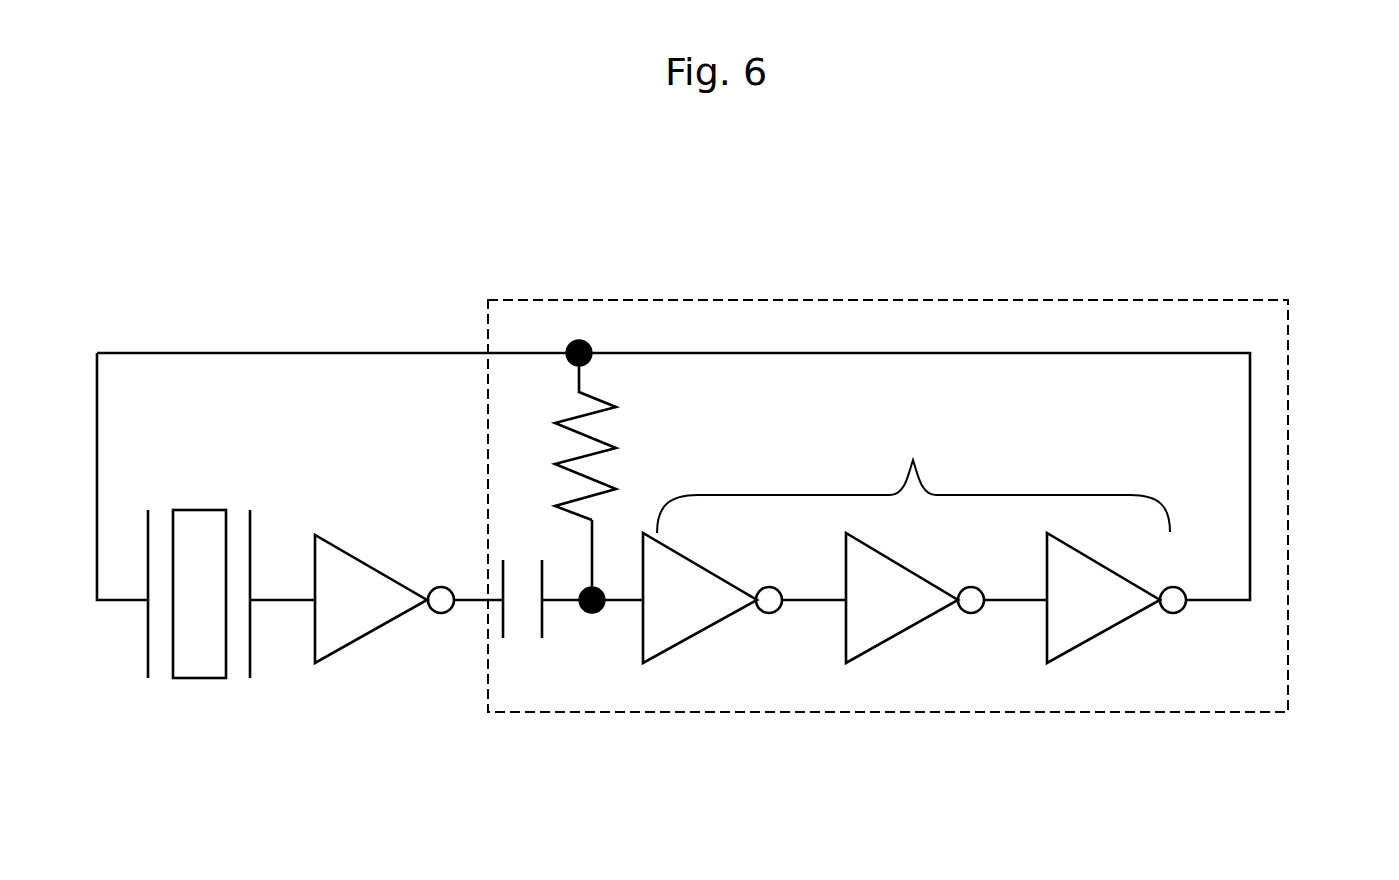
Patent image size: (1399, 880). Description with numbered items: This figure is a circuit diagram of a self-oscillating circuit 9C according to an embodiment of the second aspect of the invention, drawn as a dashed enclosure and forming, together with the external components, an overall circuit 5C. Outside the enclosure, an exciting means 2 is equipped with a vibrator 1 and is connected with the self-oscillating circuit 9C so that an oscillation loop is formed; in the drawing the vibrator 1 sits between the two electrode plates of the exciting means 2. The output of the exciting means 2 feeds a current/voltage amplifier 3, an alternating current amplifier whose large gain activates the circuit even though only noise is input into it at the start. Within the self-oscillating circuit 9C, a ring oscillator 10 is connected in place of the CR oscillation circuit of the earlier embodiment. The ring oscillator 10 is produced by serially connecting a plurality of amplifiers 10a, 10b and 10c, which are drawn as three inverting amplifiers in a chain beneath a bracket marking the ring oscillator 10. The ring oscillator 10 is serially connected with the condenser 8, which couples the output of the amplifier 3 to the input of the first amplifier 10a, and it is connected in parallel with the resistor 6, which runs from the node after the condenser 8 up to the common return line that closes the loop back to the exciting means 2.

The vibrator 1 is at (195, 523).
The exciting means 2 is at (148, 535).
The current/voltage amplifier 3 is at (372, 585).
The resistor 6 is at (602, 412).
The condenser 8 is at (543, 620).
The ring oscillator 10 is at (913, 477).
The amplifier 10a is at (692, 578).
The amplifier 10b is at (892, 578).
The amplifier 10c is at (1092, 578).
The self-oscillating circuit 9C is at (1145, 288).
The oscillator circuit 5C is at (1288, 465).